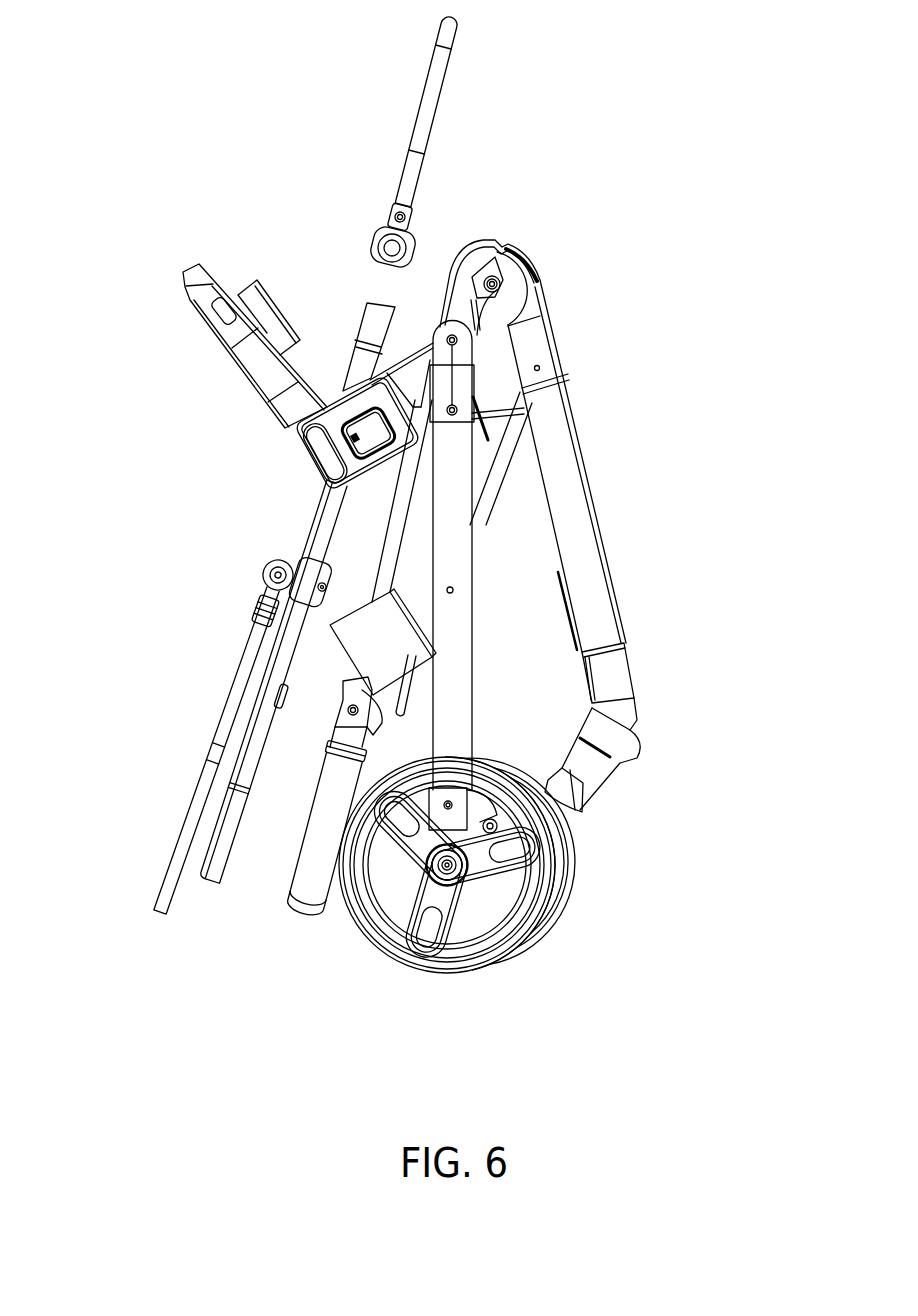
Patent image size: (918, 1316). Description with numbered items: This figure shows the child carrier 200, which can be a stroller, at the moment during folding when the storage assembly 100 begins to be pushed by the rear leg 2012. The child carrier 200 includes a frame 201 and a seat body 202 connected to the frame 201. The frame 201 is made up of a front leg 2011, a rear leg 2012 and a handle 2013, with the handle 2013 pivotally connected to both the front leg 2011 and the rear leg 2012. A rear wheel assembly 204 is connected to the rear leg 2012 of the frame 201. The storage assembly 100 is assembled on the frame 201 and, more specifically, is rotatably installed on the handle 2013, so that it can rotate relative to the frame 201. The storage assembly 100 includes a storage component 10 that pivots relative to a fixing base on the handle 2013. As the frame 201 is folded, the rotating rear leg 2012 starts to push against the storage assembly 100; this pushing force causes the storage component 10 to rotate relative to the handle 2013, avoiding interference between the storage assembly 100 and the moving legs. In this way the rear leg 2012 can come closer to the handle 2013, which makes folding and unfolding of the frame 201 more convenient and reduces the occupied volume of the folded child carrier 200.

The child carrier 200 is at (92, 51).
The frame 201 is at (738, 393).
The front leg 2011 is at (557, 456).
The rear leg 2012 is at (458, 607).
The handle 2013 is at (392, 566).
The storage component 10 is at (347, 630).
The storage assembly 100 is at (332, 658).
The seat body 202 is at (239, 421).
The rear wheel assembly 204 is at (387, 970).